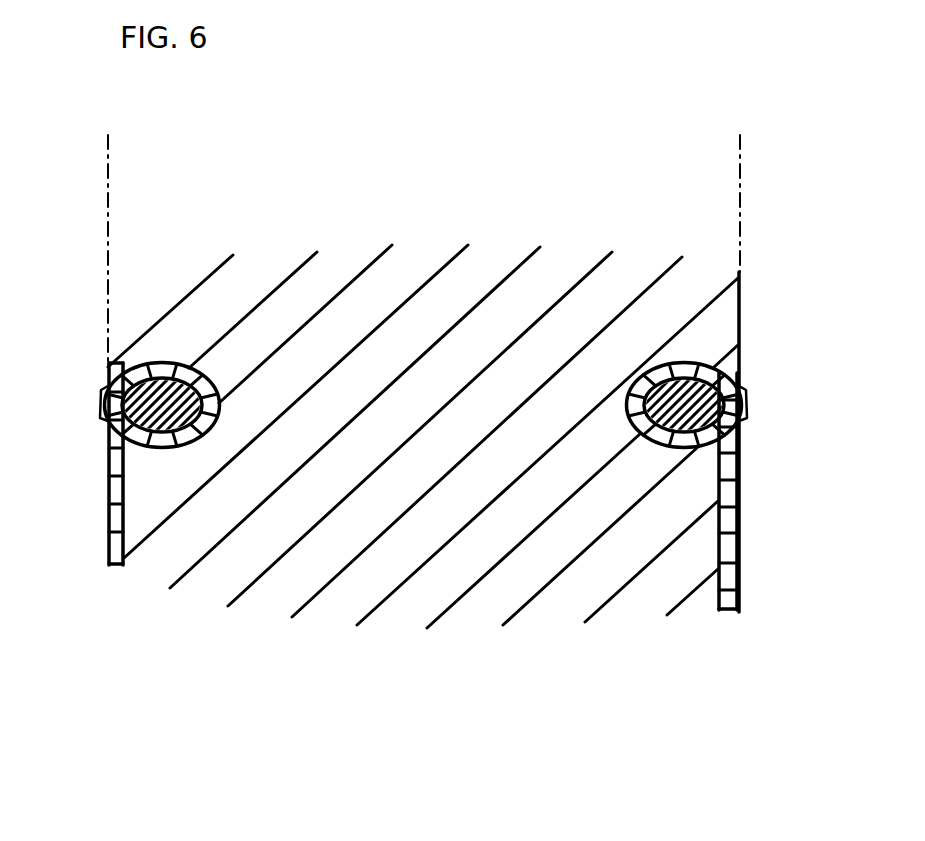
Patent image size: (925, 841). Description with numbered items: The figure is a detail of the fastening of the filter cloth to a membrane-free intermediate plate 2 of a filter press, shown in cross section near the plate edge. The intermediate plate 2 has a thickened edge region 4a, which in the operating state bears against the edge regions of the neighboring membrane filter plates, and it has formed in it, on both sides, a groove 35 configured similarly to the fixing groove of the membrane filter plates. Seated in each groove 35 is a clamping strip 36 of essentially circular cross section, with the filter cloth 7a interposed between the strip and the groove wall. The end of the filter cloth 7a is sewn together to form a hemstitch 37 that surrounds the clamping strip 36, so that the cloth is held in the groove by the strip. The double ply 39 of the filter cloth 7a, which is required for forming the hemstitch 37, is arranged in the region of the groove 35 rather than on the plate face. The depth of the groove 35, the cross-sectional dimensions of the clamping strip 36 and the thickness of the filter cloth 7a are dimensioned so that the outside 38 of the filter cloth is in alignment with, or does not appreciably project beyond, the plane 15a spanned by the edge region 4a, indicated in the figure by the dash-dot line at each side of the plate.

The intermediate plate 2 is at (622, 242).
The thickened edge region 4a is at (743, 292).
The filter cloth 7a is at (110, 550).
The plane 15a is at (108, 160).
The groove 35 is at (187, 447).
The clamping strip 36 is at (157, 447).
The hemstitch 37 is at (167, 364).
The outside of the filter cloth 38 is at (107, 494).
The double ply 39 is at (104, 403).